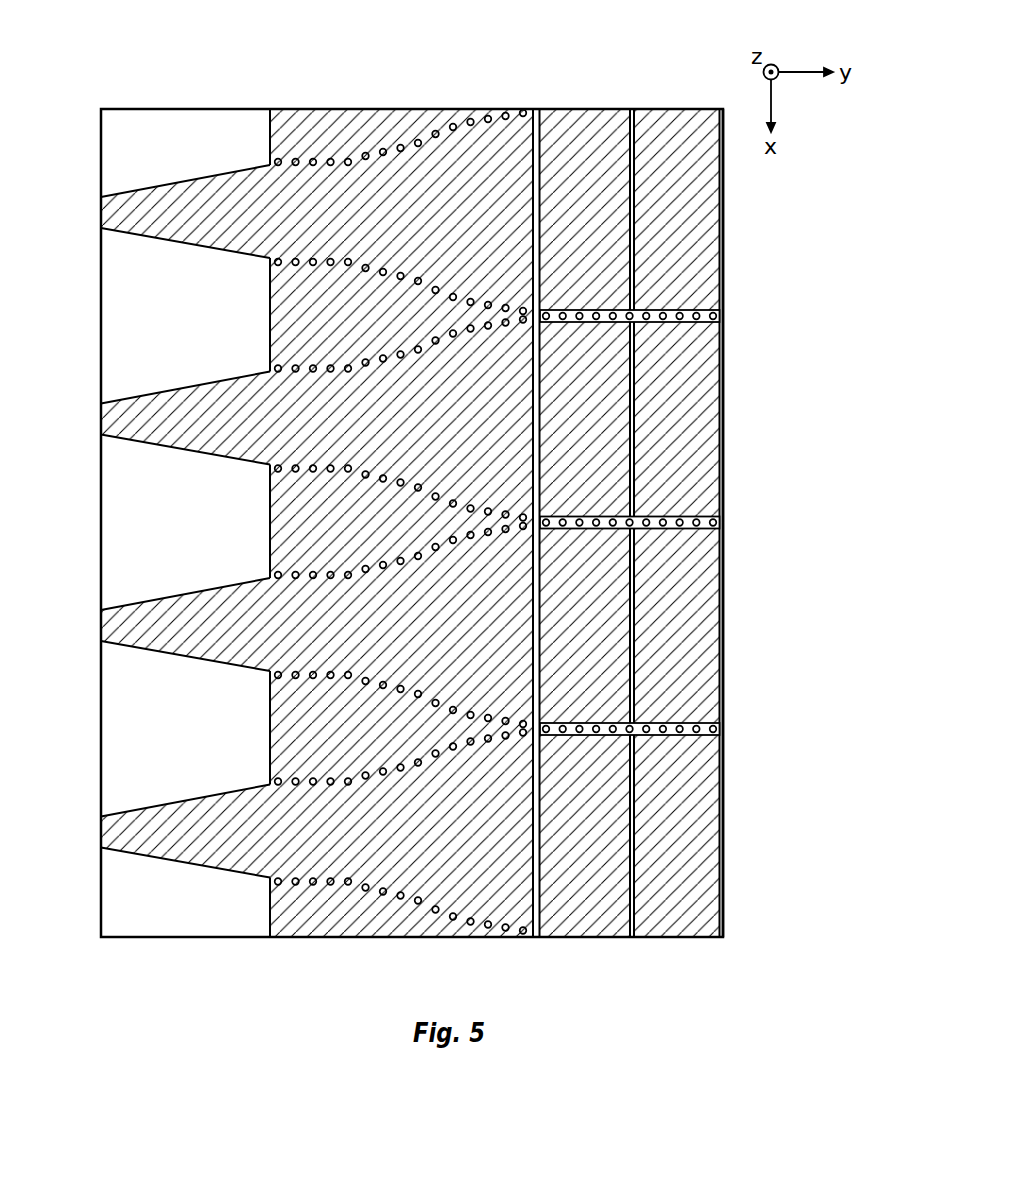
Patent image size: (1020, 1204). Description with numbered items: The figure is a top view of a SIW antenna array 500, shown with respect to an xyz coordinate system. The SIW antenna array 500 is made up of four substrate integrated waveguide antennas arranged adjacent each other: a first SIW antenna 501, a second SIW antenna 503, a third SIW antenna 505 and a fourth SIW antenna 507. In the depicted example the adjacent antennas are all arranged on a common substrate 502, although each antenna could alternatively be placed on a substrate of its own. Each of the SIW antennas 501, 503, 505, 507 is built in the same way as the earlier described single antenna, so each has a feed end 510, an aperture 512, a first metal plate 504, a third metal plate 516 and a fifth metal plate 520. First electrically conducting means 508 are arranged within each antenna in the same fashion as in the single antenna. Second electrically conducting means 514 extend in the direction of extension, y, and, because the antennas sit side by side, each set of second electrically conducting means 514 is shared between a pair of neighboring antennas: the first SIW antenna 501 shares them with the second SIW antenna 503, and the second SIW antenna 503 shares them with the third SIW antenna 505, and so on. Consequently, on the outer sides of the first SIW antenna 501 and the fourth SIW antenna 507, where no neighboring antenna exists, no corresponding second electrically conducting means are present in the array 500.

The SIW antenna array 500 is at (128, 72).
The first SIW antenna 501 is at (747, 208).
The common substrate 502 is at (107, 134).
The second SIW antenna 503 is at (743, 423).
The first metal plate 504 is at (323, 121).
The third SIW antenna 505 is at (746, 626).
The fourth SIW antenna 507 is at (746, 837).
The first electrically conducting means 508 is at (437, 133).
The feed end 510 is at (107, 215).
The aperture 512 is at (535, 215).
The second electrically conducting means 514 is at (700, 322).
The third metal plate 516 is at (585, 122).
The fifth metal plate 520 is at (680, 122).